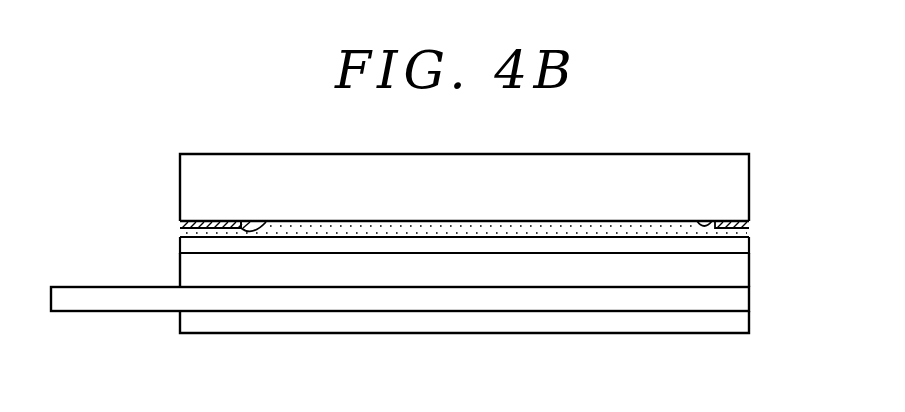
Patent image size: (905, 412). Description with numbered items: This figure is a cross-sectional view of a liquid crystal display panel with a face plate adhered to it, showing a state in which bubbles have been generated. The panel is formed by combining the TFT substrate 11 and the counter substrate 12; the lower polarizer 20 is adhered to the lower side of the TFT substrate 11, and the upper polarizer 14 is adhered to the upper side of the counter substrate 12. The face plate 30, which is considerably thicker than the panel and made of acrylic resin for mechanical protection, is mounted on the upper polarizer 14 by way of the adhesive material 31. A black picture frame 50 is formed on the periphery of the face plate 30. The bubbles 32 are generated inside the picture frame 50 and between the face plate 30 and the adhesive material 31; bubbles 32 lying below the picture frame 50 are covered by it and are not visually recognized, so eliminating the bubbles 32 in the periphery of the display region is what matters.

The face plate 30 is at (740, 166).
The picture frame 50 is at (732, 216).
The bubbles 32 is at (255, 222).
The adhesive material 31 is at (747, 229).
The upper polarizer 14 is at (743, 246).
The counter substrate 12 is at (740, 270).
The TFT substrate 11 is at (745, 298).
The lower polarizer 20 is at (743, 322).